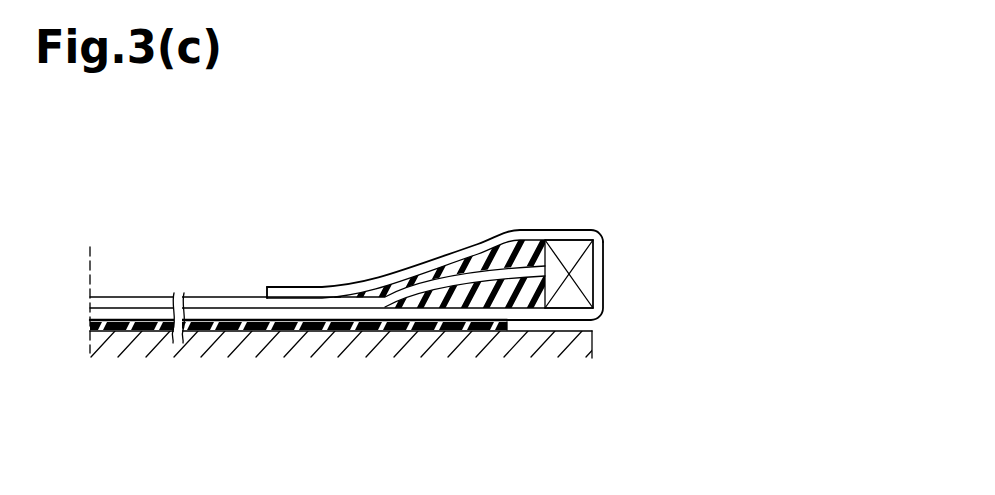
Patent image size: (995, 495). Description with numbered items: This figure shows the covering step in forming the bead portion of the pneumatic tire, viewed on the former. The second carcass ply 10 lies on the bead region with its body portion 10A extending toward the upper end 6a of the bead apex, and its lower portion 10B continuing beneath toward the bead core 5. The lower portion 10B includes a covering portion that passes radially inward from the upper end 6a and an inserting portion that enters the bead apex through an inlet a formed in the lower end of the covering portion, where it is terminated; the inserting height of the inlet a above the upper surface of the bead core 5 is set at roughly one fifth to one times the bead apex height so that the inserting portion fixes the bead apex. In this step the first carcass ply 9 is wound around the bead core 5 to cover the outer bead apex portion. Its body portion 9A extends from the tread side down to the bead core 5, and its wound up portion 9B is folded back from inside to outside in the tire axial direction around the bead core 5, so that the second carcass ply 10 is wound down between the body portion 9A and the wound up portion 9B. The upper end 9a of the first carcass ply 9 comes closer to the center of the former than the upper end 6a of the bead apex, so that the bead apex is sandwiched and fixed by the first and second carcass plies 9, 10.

The second carcass ply 10 is at (317, 207).
The body portion 10A is at (204, 300).
The lower portion 10B is at (437, 282).
The first carcass ply 9 is at (404, 273).
The body portion 9A is at (543, 323).
The wound up portion 9B is at (481, 243).
The upper end 9a is at (247, 285).
The upper end 6a is at (315, 308).
The bead core 5 is at (585, 273).
The inlet a is at (334, 279).